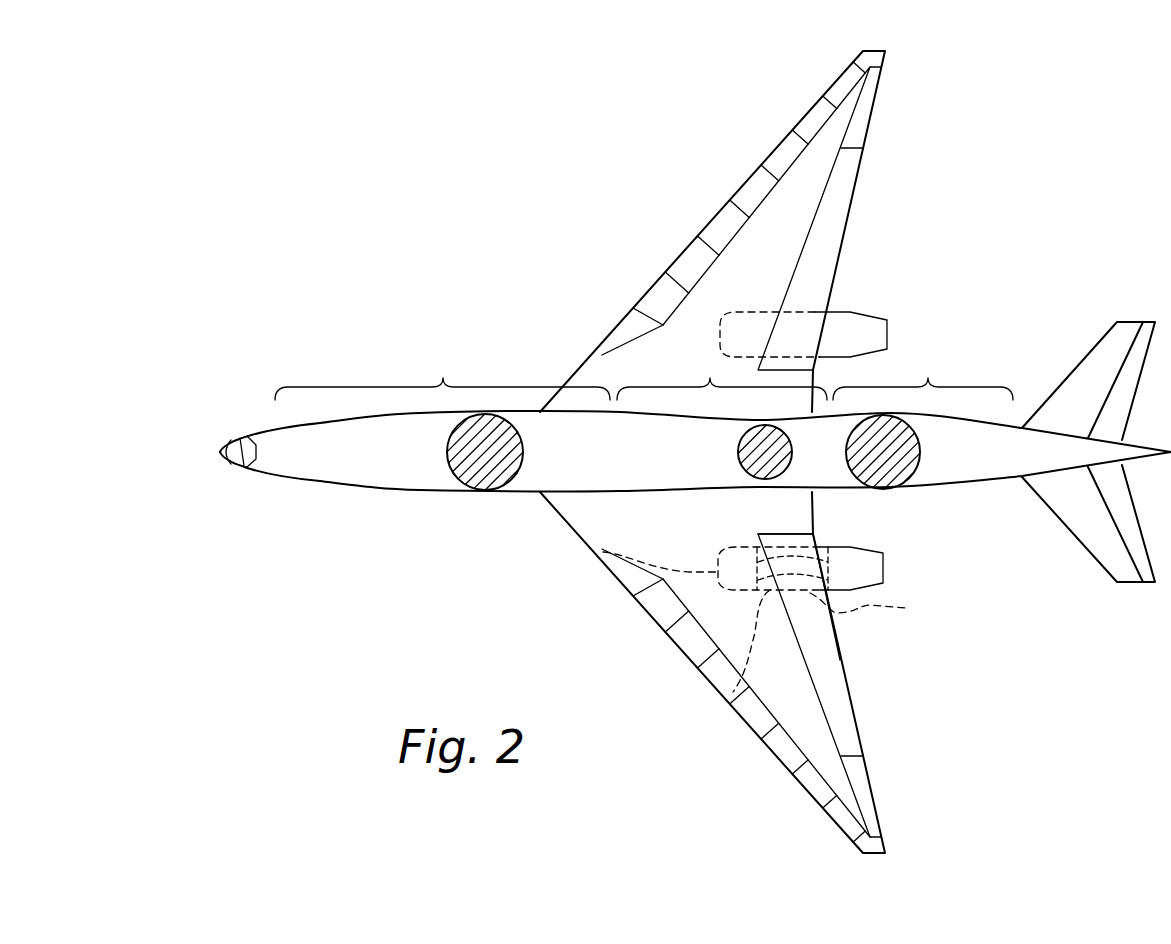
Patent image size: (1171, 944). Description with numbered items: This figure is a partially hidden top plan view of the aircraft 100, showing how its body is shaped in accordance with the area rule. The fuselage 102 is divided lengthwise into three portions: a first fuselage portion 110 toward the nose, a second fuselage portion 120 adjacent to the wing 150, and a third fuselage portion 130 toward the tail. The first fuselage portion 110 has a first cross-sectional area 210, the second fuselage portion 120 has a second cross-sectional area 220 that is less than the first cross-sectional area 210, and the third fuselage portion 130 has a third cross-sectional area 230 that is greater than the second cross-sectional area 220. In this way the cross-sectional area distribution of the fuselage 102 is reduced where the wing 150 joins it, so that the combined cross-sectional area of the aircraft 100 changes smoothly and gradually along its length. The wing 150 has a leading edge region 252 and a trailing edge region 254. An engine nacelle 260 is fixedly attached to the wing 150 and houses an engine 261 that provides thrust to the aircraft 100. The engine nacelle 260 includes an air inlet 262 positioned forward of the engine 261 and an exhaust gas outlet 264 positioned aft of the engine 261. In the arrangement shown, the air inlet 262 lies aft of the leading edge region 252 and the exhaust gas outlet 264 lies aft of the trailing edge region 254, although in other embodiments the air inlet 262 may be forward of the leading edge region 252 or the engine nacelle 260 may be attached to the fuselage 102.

The aircraft 100 is at (298, 556).
The fuselage 102 is at (272, 478).
The first fuselage portion 110 is at (443, 378).
The second fuselage portion 120 is at (710, 378).
The third fuselage portion 130 is at (928, 378).
The wing 150 is at (805, 115).
The first cross-sectional area 210 is at (447, 465).
The second cross-sectional area 220 is at (787, 467).
The third cross-sectional area 230 is at (920, 458).
The leading edge region 252 is at (640, 602).
The trailing edge region 254 is at (837, 627).
The engine nacelle 260 is at (877, 608).
The engine 261 is at (733, 692).
The air inlet 262 is at (603, 552).
The exhaust gas outlet 264 is at (887, 570).